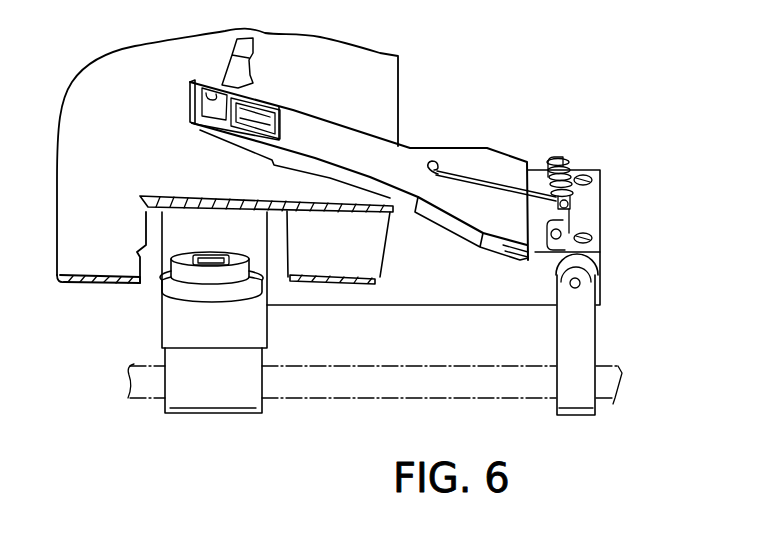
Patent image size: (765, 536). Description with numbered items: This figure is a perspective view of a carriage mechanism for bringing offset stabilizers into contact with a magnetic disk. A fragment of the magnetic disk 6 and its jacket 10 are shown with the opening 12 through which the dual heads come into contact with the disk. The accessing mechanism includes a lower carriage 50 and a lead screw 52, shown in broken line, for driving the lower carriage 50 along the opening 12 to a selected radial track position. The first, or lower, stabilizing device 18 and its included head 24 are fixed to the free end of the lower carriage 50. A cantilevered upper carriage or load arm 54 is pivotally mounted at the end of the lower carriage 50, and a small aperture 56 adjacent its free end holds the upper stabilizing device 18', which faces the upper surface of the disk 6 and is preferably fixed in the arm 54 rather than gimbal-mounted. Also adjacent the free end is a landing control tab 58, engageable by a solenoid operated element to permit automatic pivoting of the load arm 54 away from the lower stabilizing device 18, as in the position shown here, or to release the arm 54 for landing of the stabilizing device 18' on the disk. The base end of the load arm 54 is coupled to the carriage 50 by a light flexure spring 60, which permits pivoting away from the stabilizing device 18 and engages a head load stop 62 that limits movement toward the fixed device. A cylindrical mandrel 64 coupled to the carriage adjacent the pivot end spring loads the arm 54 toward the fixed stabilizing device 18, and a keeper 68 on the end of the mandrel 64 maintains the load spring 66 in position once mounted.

The magnetic disk 6 is at (334, 247).
The jacket 10 is at (102, 260).
The opening 12 is at (148, 282).
The lower stabilizing device 18 is at (213, 312).
The upper stabilizing device 18' is at (204, 99).
The head 24 is at (212, 255).
The lower carriage 50 is at (442, 283).
The lead screw 52 is at (370, 380).
The load arm 54 is at (410, 146).
The aperture 56 is at (212, 97).
The landing control tab 58 is at (256, 50).
The flexure spring 60 is at (537, 236).
The head load stop 62 is at (528, 260).
The cylindrical mandrel 64 is at (575, 213).
The load spring 66 is at (579, 175).
The keeper 68 is at (597, 228).